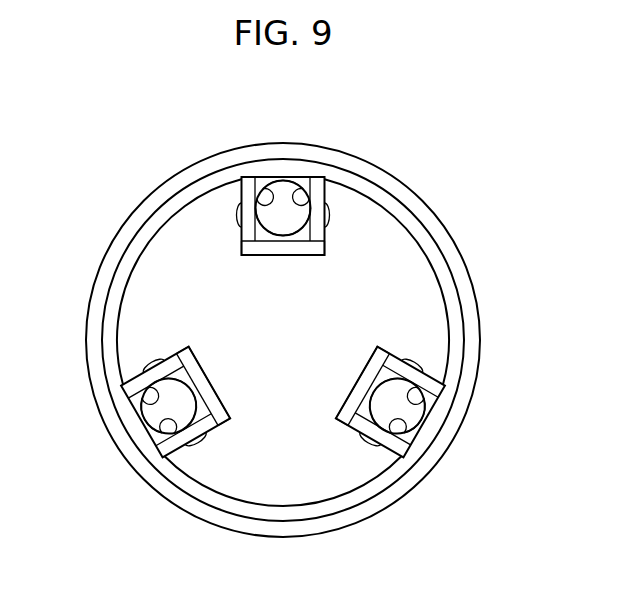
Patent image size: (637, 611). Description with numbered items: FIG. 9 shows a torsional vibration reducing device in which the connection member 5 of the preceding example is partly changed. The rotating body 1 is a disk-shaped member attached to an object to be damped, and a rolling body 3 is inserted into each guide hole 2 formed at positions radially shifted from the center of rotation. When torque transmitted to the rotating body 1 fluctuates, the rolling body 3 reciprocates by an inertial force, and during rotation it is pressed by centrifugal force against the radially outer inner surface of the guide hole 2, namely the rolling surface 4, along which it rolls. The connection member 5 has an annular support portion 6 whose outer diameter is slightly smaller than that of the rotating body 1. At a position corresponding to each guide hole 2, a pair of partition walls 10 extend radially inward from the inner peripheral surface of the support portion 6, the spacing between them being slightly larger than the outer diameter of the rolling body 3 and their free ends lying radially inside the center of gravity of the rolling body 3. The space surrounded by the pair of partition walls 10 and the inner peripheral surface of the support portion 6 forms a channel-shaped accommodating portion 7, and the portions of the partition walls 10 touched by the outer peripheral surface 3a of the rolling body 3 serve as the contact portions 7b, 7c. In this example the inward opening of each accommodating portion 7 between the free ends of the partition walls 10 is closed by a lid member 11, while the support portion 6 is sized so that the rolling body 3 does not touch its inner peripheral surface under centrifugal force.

The rotating body 1 is at (468, 281).
The guide hole 2 is at (264, 246).
The rolling body 3 is at (300, 200).
The outer peripheral surface 3a is at (284, 246).
The rolling surface 4 is at (283, 182).
The connection member 5 is at (470, 245).
The support portion 6 is at (415, 230).
The accommodating portion 7 is at (336, 219).
The contact portion 7b is at (322, 182).
The contact portion 7c is at (265, 192).
The partition wall 10 is at (238, 216).
The lid member 11 is at (312, 252).